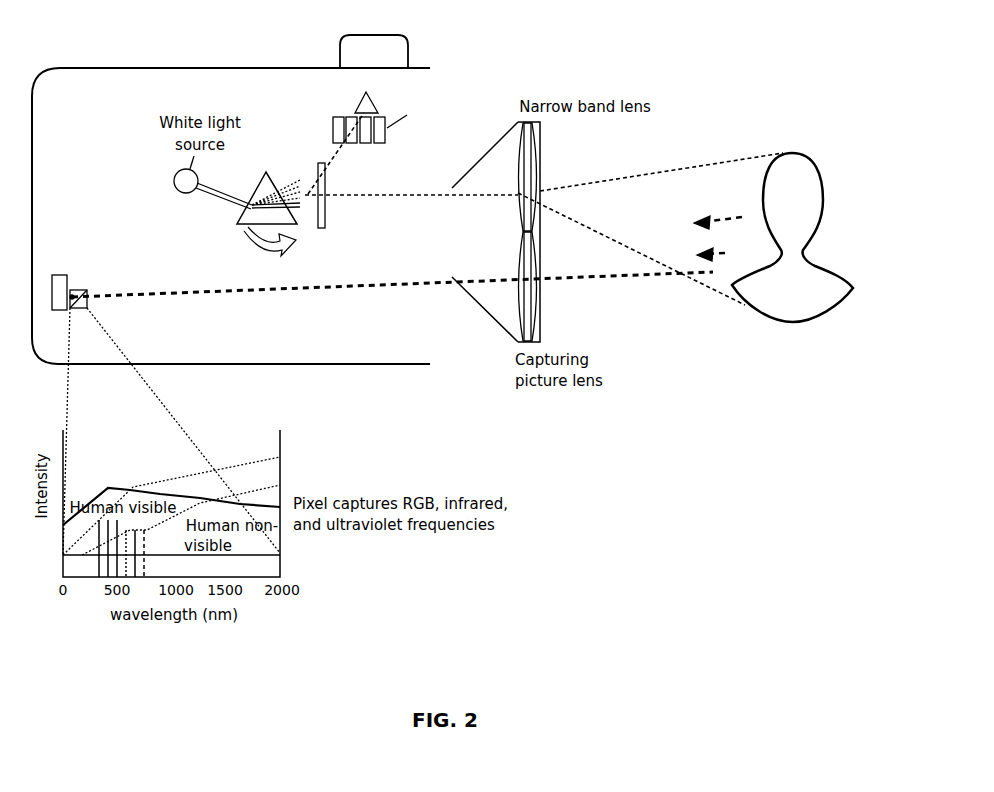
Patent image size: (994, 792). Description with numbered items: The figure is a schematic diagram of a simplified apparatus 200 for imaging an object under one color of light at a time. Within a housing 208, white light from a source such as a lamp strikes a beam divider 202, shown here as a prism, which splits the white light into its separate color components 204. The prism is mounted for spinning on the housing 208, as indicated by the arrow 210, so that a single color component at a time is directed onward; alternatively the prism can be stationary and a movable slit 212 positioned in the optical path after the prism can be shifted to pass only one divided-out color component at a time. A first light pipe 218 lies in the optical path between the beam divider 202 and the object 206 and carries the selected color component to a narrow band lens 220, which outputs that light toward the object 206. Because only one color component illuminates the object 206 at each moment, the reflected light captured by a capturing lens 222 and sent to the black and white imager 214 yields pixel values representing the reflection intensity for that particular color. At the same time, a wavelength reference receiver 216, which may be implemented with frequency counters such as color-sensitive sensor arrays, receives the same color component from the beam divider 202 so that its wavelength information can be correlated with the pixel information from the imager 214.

The apparatus 200 is at (499, 66).
The beam divider 202 is at (240, 219).
The color components 204 is at (299, 182).
The object 206 is at (805, 320).
The housing 208 is at (140, 68).
The arrow 210 is at (290, 240).
The movable slit 212 is at (325, 223).
The black and white imager 214 is at (58, 310).
The wavelength reference receiver 216 is at (357, 102).
The first light pipe 218 is at (490, 193).
The narrow band lens 220 is at (532, 155).
The capturing lens 222 is at (532, 290).